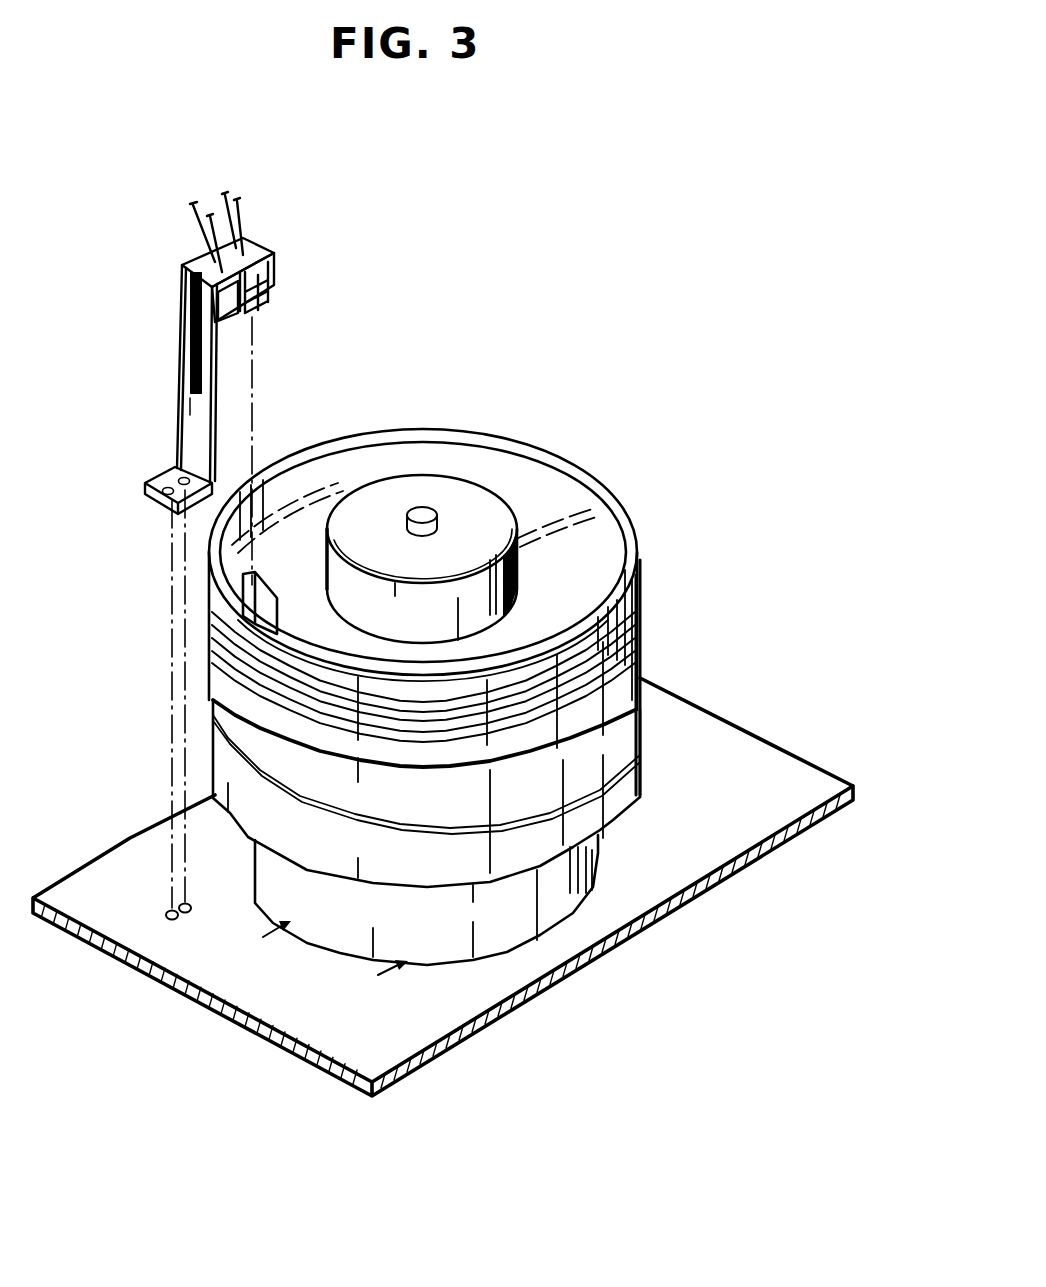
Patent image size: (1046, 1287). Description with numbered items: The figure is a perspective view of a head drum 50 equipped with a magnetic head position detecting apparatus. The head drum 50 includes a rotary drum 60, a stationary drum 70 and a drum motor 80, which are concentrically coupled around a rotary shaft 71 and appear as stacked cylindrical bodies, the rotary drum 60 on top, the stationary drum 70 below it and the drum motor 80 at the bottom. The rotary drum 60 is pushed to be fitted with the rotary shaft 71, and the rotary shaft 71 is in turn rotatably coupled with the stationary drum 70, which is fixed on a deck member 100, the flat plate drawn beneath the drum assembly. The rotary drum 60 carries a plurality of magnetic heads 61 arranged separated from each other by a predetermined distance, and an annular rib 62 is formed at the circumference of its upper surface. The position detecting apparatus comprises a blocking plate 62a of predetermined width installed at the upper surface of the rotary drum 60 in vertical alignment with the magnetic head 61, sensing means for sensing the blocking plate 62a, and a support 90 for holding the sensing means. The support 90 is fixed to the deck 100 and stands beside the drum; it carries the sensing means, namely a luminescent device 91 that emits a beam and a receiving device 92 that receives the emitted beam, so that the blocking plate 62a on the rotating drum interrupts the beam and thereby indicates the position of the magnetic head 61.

The head drum 50 is at (646, 468).
The rotary drum 60 is at (426, 588).
The magnetic head 61 is at (212, 708).
The annular rib 62 is at (298, 456).
The blocking plate 62a is at (250, 614).
The stationary drum 70 is at (654, 697).
The rotary shaft 71 is at (428, 510).
The drum motor 80 is at (610, 855).
The support 90 is at (195, 550).
The luminescent device 91 is at (267, 312).
The receiving device 92 is at (241, 318).
The deck member 100 is at (422, 1042).